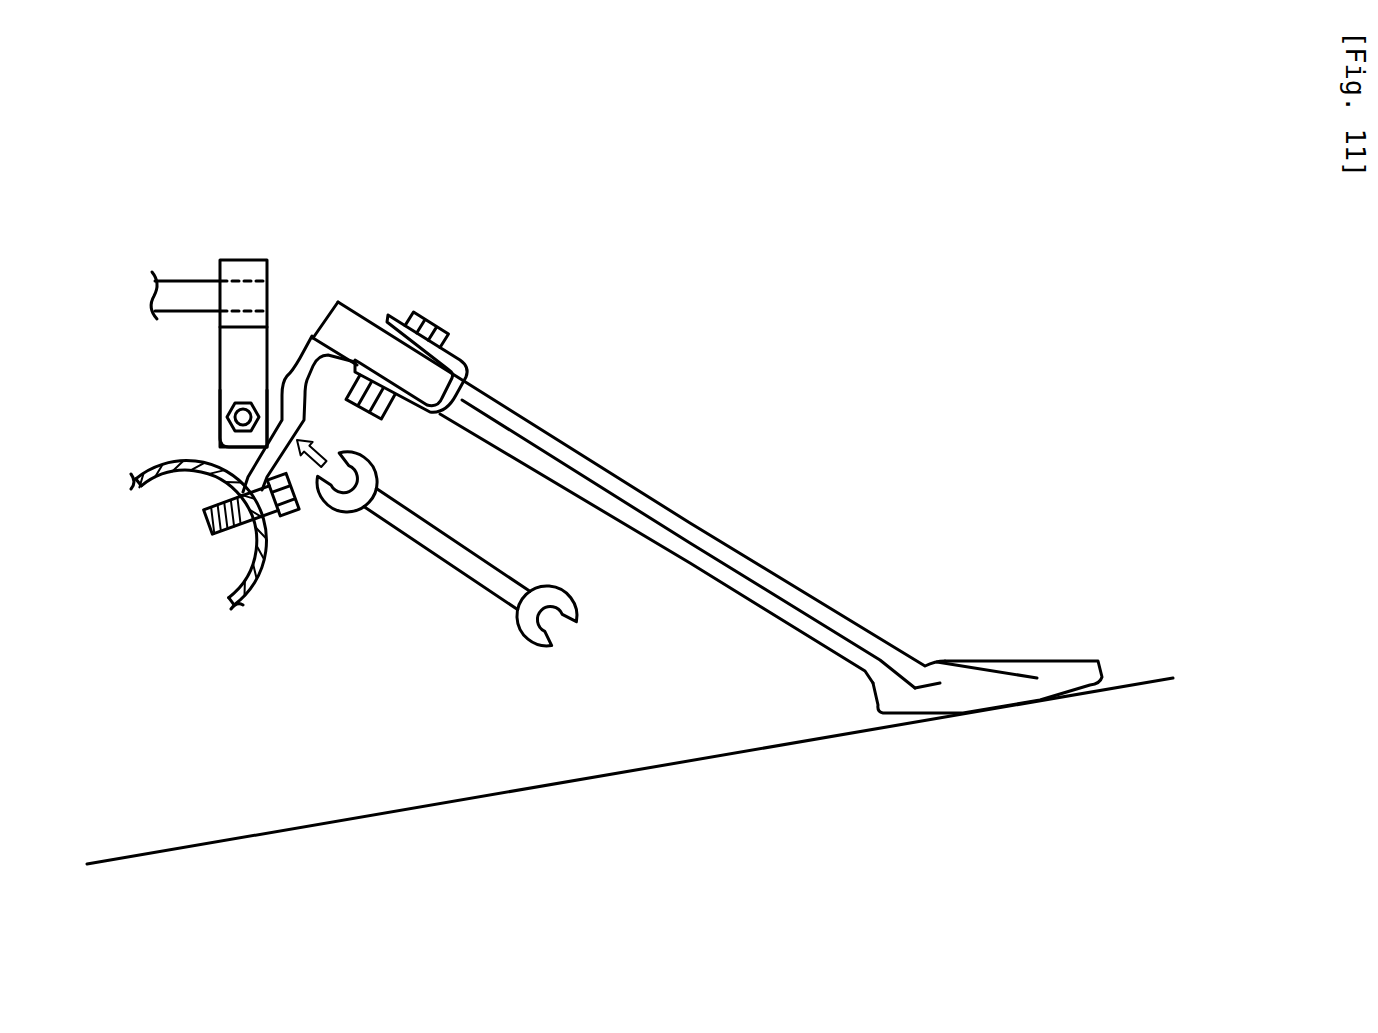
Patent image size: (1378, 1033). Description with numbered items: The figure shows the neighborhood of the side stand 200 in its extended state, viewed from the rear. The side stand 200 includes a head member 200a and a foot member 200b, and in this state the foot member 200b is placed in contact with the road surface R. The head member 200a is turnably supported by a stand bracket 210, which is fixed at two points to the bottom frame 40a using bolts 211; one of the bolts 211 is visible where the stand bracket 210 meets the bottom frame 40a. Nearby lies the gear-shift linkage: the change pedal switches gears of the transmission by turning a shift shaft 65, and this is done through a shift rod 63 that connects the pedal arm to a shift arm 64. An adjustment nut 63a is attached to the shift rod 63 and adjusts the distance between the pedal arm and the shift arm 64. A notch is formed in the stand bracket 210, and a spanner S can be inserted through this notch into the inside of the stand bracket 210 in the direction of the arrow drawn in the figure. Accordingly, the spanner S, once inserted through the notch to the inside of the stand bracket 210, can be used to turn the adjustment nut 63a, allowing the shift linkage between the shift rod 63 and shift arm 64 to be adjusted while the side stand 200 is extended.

The shift arm 64 is at (250, 259).
The shift shaft 65 is at (184, 290).
The shift rod 63 is at (228, 421).
The adjustment nut 63a is at (228, 401).
The stand bracket 210 is at (303, 355).
The bolts 211 is at (302, 523).
The bottom frame 40a is at (255, 590).
The side stand 200 is at (712, 531).
The head member 200a is at (458, 362).
The foot member 200b is at (1042, 667).
The road surface R is at (1139, 684).
The spanner S is at (471, 567).